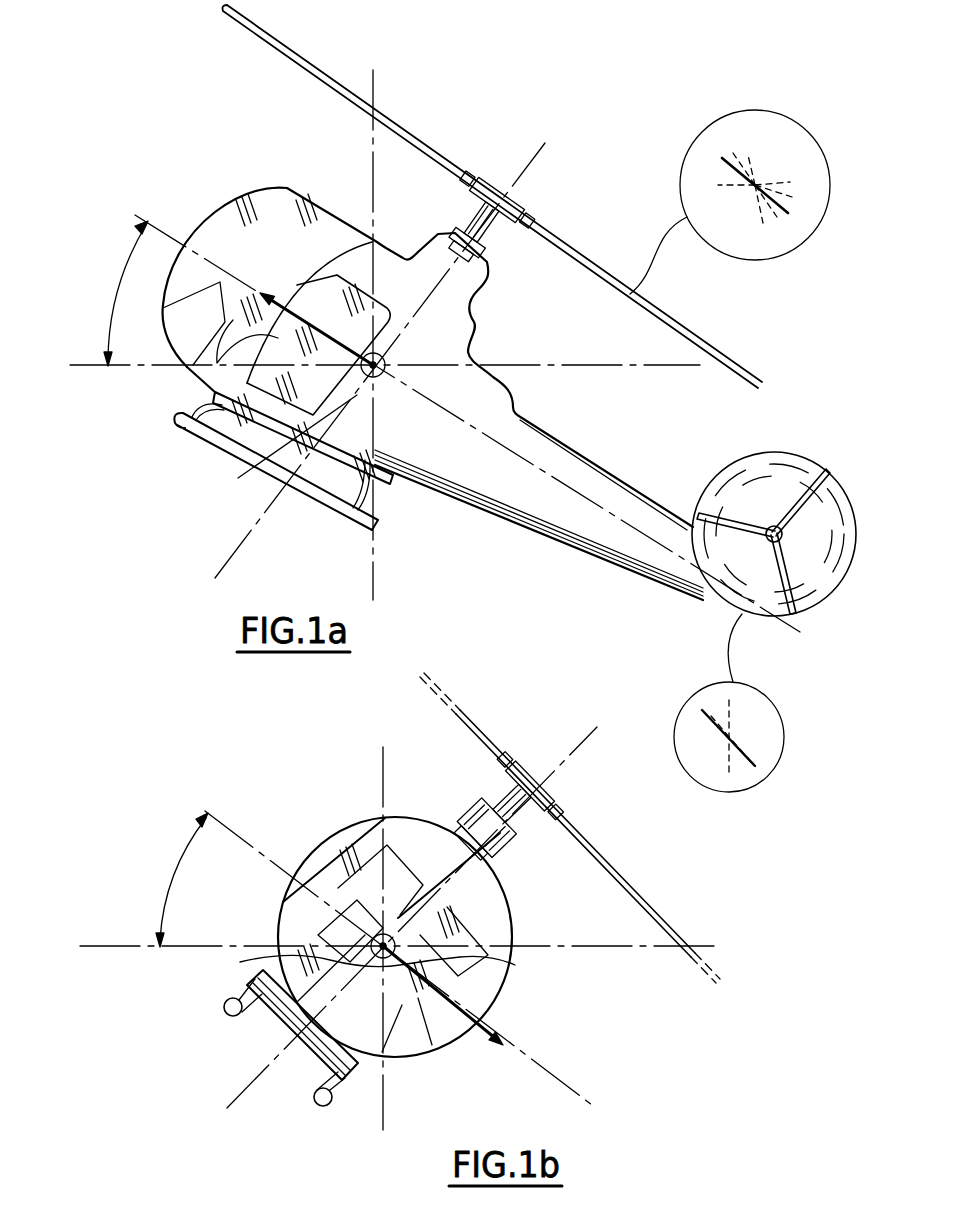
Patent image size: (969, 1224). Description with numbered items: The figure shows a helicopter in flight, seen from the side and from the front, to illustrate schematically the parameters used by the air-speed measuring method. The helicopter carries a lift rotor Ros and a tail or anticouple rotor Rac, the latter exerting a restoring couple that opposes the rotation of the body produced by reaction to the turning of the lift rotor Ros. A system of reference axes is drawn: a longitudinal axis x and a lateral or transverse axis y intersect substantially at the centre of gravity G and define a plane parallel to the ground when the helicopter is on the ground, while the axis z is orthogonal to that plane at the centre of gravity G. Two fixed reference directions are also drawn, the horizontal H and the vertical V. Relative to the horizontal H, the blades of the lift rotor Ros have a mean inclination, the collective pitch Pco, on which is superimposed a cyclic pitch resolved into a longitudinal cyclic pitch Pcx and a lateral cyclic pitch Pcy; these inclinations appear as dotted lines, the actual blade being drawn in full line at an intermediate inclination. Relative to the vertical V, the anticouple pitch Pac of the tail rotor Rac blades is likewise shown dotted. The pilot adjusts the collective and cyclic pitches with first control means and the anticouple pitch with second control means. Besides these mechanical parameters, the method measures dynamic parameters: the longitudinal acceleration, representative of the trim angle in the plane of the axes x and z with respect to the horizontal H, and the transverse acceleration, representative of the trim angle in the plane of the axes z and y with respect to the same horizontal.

In FIG. 1a, the centre of gravity G is at (392, 350).
In FIG. 1b, the centre of gravity G is at (515, 965).
In FIG. 1a, the lift rotor Ros is at (518, 207).
In FIG. 1b, the lift rotor Ros is at (552, 794).
In FIG. 1a, the tail or anticouple rotor Rac is at (733, 472).
In FIG. 1a, the anticouple pitch Pac is at (716, 712).
In FIG. 1a, the collective pitch Pco is at (738, 155).
In FIG. 1a, the lateral cyclic pitch Pcy is at (718, 170).
In FIG. 1a, the longitudinal cyclic pitch Pcx is at (752, 158).
In FIG. 1a, the horizontal reference direction H is at (97, 370).
In FIG. 1b, the horizontal reference direction H is at (105, 952).
In FIG. 1a, the vertical reference direction V is at (377, 82).
In FIG. 1b, the vertical reference direction V is at (386, 754).
In FIG. 1a, the longitudinal axis x is at (128, 212).
In FIG. 1b, the longitudinal axis x is at (359, 964).
In FIG. 1a, the lateral or transverse axis y is at (268, 449).
In FIG. 1b, the lateral or transverse axis y is at (212, 808).
In FIG. 1a, the vertical axis z is at (538, 152).
In FIG. 1b, the vertical axis z is at (588, 732).